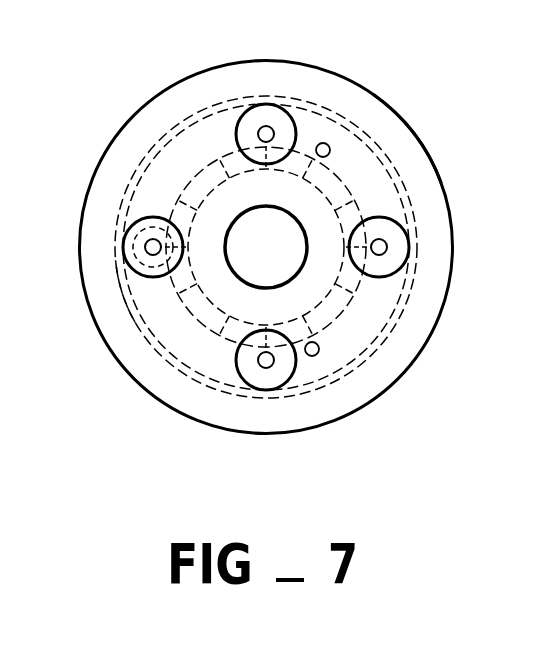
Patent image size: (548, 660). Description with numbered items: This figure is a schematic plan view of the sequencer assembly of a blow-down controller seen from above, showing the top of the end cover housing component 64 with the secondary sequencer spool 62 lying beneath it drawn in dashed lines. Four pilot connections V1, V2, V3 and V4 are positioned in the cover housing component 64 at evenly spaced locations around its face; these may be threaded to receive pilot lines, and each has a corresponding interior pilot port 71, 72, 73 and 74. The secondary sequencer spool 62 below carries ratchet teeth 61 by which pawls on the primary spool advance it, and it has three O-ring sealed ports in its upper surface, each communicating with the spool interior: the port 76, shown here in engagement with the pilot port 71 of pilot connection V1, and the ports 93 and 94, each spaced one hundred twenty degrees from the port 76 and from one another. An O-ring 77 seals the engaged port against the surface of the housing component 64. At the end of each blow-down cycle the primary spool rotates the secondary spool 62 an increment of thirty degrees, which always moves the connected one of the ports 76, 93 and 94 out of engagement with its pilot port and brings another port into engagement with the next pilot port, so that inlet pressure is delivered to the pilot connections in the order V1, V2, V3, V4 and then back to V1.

The ratchet teeth 61 is at (393, 315).
The secondary sequencer spool 62 is at (362, 138).
The end cover housing component 64 is at (412, 130).
The pilot port 71 is at (153, 247).
The pilot port 72 is at (267, 362).
The pilot port 73 is at (379, 247).
The pilot port 74 is at (297, 63).
The port 76 is at (128, 183).
The O-ring 77 is at (123, 297).
The port 93 is at (325, 143).
The port 94 is at (317, 355).
The pilot connection V1 is at (159, 275).
The pilot connection V2 is at (246, 378).
The pilot connection V3 is at (398, 264).
The pilot connection V4 is at (248, 111).